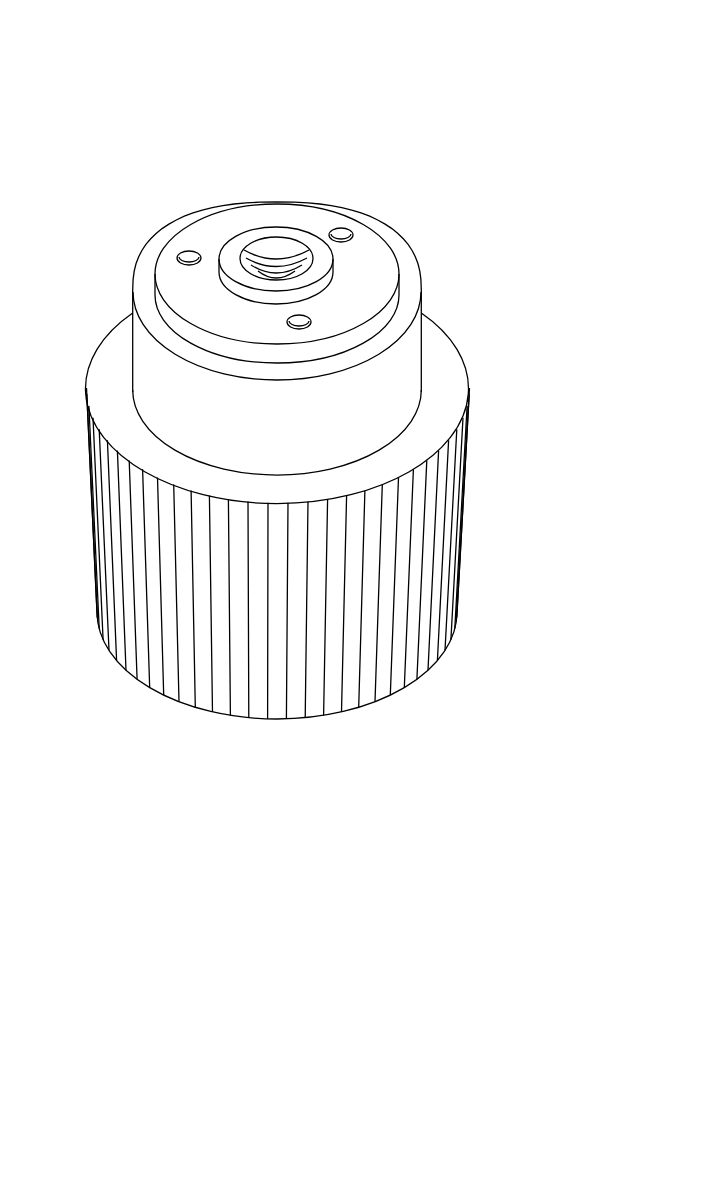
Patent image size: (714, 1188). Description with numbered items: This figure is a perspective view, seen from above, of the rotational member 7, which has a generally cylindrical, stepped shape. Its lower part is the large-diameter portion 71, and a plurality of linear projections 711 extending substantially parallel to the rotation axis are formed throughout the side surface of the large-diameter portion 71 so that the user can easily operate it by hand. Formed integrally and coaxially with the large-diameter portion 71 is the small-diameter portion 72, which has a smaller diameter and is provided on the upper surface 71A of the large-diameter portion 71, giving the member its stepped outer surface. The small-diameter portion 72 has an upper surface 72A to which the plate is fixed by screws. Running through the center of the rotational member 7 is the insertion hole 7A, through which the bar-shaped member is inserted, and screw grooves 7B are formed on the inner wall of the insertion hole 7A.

The rotational member 7 is at (151, 124).
The insertion hole 7A is at (300, 238).
The screw grooves 7B is at (272, 262).
The large-diameter portion 71 is at (432, 540).
The upper surface of the large-diameter portion 71A is at (446, 421).
The linear projections 711 is at (137, 613).
The small-diameter portion 72 is at (410, 360).
The upper surface of the small-diameter portion 72A is at (363, 260).